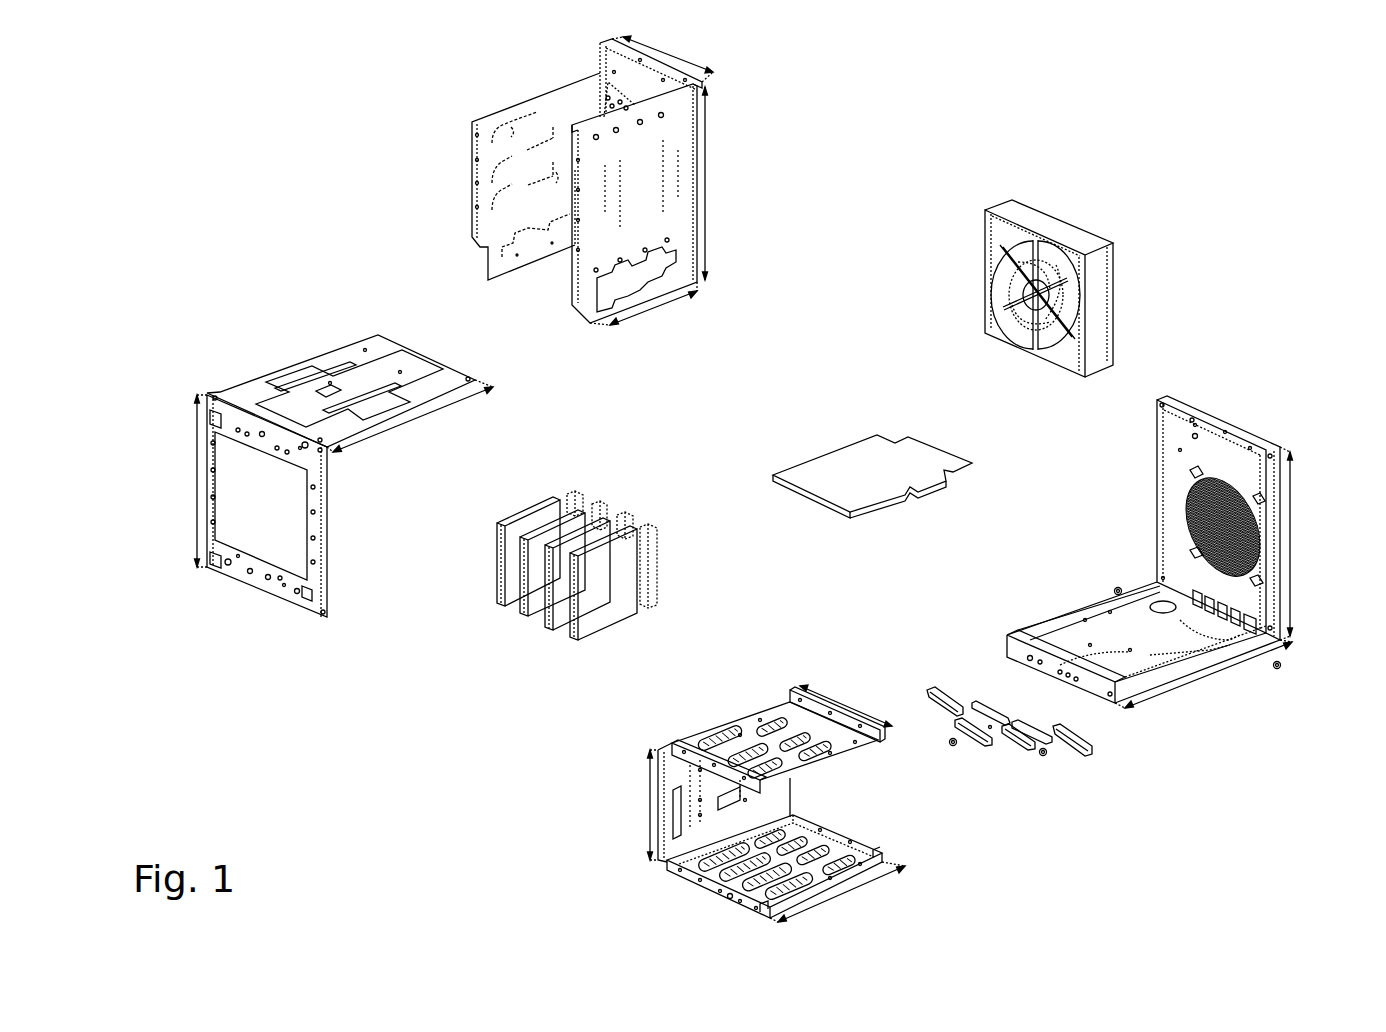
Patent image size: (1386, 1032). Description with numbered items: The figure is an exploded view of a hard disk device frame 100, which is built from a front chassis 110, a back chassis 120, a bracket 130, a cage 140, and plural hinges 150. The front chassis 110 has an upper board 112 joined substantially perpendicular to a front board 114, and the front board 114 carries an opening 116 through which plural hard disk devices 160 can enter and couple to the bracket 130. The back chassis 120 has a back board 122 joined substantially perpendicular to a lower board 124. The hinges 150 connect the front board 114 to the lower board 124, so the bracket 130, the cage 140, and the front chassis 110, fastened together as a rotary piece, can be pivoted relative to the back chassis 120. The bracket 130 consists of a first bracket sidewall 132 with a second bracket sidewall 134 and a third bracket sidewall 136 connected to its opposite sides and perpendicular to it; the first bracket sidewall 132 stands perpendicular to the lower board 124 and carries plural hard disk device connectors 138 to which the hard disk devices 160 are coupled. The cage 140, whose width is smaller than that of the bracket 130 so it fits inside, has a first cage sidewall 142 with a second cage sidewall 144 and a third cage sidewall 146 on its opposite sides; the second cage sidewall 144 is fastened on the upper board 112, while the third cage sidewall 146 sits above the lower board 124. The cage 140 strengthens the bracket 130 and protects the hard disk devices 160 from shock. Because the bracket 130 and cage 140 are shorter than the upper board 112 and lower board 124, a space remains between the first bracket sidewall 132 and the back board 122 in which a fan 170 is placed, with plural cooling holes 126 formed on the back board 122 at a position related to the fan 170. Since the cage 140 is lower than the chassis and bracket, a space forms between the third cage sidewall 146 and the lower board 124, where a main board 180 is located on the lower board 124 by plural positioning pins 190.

The hard disk device frame 100 is at (166, 82).
The front chassis 110 is at (206, 388).
The upper board 112 is at (318, 372).
The front board 114 is at (207, 452).
The opening 116 is at (275, 538).
The back chassis 120 is at (1190, 390).
The back board 122 is at (1235, 442).
The lower board 124 is at (1150, 657).
The cooling holes 126 is at (1262, 525).
The bracket 130 is at (475, 100).
The first bracket sidewall 132 is at (605, 62).
The second bracket sidewall 134 is at (480, 174).
The third bracket sidewall 136 is at (683, 120).
The hard disk device connectors 138 is at (572, 493).
The cage 140 is at (656, 742).
The first cage sidewall 142 is at (673, 830).
The second cage sidewall 144 is at (737, 738).
The third cage sidewall 146 is at (810, 877).
The hinges 150 is at (945, 690).
The hard disk devices 160 is at (522, 505).
The fan 170 is at (990, 190).
The main board 180 is at (830, 436).
The positioning pins 190 is at (1114, 588).